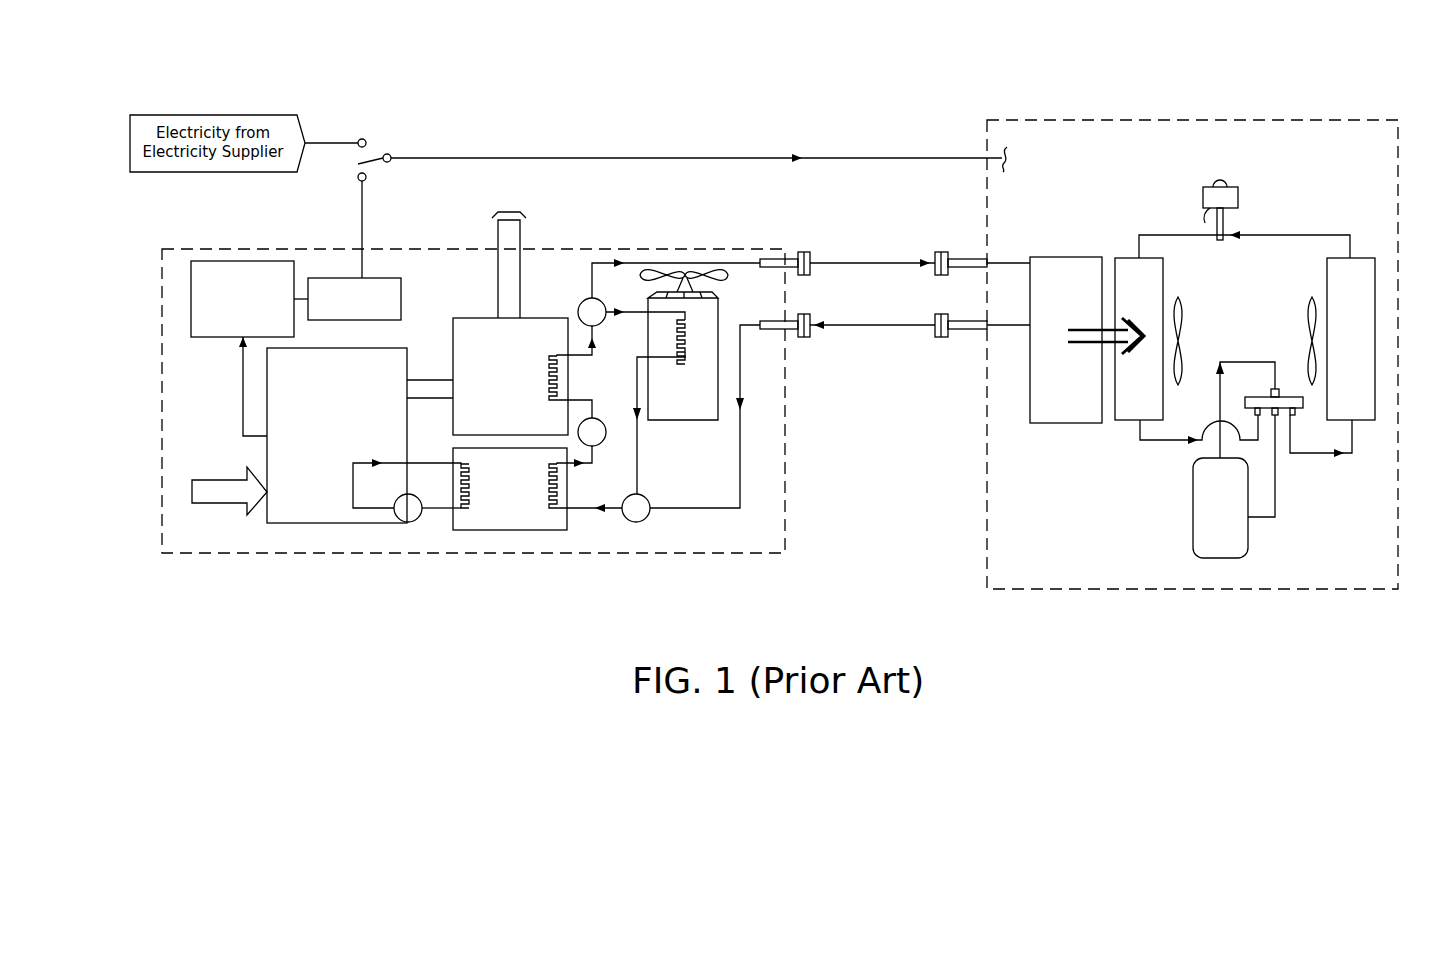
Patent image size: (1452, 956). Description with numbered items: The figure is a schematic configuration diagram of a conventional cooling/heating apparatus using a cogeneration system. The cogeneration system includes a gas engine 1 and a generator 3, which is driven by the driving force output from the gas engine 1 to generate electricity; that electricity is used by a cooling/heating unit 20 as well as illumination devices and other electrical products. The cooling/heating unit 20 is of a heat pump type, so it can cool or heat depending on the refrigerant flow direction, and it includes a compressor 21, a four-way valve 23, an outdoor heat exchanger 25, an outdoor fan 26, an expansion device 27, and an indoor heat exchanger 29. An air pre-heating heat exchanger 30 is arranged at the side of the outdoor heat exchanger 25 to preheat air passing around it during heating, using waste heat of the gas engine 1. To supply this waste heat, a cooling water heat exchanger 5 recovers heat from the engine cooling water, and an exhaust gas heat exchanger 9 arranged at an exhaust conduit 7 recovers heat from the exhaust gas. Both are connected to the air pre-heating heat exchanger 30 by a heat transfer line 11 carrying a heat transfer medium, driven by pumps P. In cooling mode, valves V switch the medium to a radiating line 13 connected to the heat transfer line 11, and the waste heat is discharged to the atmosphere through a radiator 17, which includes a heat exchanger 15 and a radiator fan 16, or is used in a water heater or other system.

The gas engine 1 is at (281, 399).
The generator 3 is at (198, 286).
The cooling water heat exchanger 5 is at (535, 522).
The exhaust conduit 7 is at (506, 280).
The exhaust gas heat exchanger 9 is at (478, 415).
The heat transfer line 11 is at (873, 325).
The radiating line 13 is at (637, 463).
The heat exchanger 15 is at (700, 296).
The radiator fan 16 is at (656, 274).
The radiator 17 is at (718, 103).
The cooling/heating unit 20 is at (1378, 96).
The compressor 21 is at (1216, 545).
The 4-way valve 23 is at (1280, 403).
The outdoor heat exchanger 25 is at (1064, 403).
The outdoor fan 26 is at (1127, 405).
The expansion device 27 is at (1207, 197).
The indoor heat exchanger 29 is at (1368, 338).
The air pre-heating heat exchanger 30 is at (1060, 408).